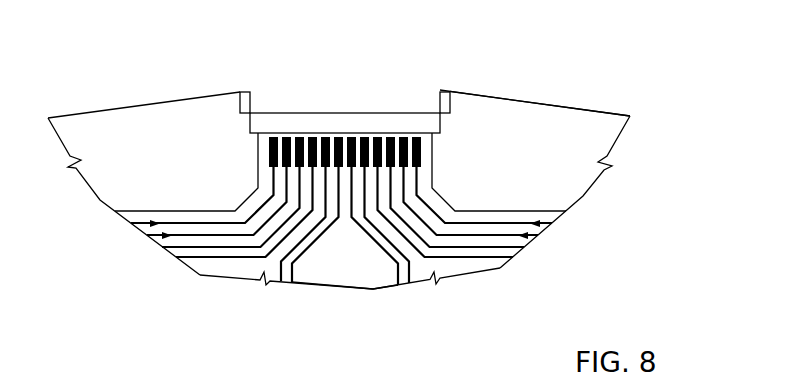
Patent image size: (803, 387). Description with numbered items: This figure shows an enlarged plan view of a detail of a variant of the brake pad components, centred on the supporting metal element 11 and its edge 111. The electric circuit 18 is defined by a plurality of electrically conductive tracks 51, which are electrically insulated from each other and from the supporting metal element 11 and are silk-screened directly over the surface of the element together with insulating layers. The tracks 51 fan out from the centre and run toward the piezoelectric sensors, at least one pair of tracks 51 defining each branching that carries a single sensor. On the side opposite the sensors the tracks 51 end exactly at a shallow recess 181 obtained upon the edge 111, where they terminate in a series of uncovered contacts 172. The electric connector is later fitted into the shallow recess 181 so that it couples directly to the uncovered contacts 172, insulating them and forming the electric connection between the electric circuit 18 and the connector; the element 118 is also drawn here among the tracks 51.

The supporting metal element 11 is at (528, 112).
The edge 111 is at (572, 96).
The shallow recess 181 is at (258, 100).
The uncovered contacts 172 is at (377, 133).
The conductive traces 118 is at (442, 202).
The electrically conductive tracks 51 is at (162, 236).
The electric circuit 18 is at (344, 264).